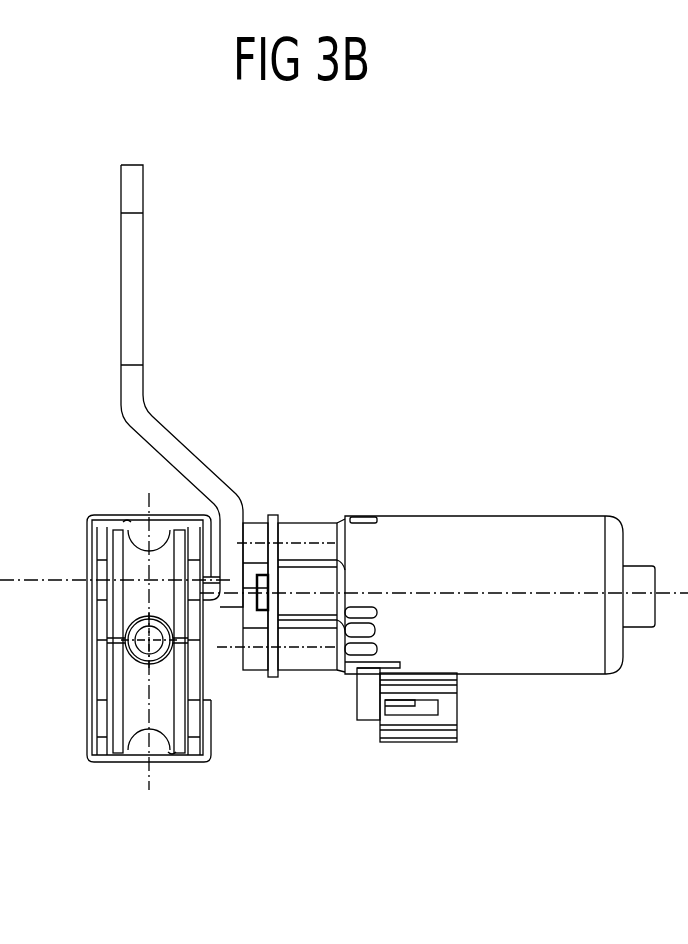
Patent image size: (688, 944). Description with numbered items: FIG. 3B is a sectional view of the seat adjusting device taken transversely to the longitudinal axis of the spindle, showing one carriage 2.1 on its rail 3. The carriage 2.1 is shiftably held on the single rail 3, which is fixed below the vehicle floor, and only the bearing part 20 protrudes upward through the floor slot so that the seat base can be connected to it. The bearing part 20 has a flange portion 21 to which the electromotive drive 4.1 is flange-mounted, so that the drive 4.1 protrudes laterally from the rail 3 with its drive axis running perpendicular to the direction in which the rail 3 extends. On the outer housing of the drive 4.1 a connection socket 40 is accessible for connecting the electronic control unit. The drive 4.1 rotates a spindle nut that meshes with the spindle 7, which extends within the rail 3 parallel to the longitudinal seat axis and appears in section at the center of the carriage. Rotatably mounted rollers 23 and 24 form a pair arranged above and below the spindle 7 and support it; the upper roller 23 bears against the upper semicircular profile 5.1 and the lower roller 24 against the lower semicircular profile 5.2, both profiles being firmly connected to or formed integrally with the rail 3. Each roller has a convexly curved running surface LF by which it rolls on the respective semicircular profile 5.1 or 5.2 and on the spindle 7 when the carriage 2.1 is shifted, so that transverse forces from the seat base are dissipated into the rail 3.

The carriage 2.1 is at (383, 265).
The rail 3 is at (102, 770).
The electromotive drive 4.1 is at (569, 507).
The semicircular profile 5.1 is at (160, 530).
The semicircular profile 5.2 is at (137, 748).
The spindle 7 is at (148, 642).
The bearing part 20 is at (123, 190).
The flange portion 21 is at (233, 535).
The roller 23 is at (135, 528).
The roller 24 is at (178, 753).
The connection socket 40 is at (447, 713).
The running surface LF is at (140, 568).